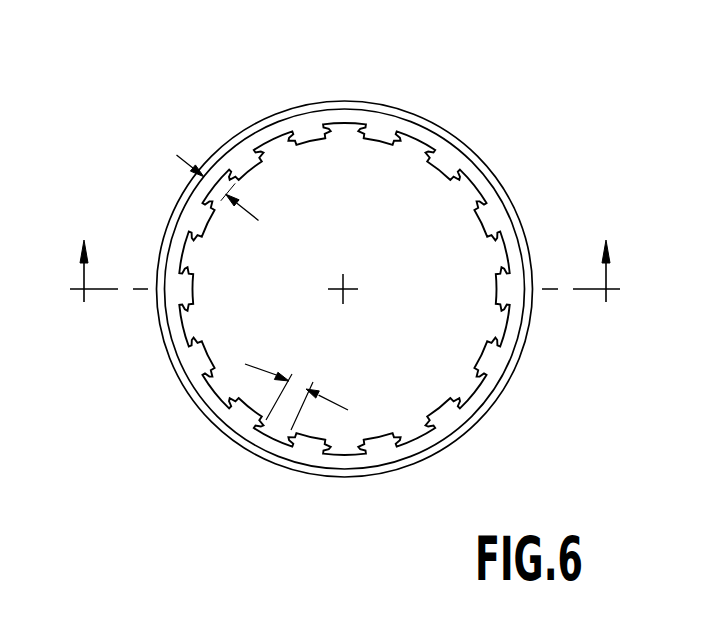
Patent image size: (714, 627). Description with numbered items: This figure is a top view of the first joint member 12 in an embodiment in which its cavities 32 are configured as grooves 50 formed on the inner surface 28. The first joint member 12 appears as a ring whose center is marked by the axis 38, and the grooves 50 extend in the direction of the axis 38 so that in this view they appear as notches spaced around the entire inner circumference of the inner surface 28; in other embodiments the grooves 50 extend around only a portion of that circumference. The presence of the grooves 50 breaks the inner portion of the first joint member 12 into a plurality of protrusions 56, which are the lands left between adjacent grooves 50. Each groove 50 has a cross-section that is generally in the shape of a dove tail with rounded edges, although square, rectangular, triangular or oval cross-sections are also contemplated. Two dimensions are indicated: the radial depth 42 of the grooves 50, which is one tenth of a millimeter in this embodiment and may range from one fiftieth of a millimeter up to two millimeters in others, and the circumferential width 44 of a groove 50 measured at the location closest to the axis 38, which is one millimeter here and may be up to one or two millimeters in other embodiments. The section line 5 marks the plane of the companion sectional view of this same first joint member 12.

The first joint member 12 is at (457, 142).
The inner surface 28 is at (351, 296).
The cavities 32 is at (470, 187).
The axis 38 is at (343, 289).
The radial depth 42 is at (217, 188).
The circumferential width 44 is at (297, 389).
The grooves 50 is at (351, 296).
The protrusions 56 is at (351, 296).
The section line 5- 5 is at (341, 282).